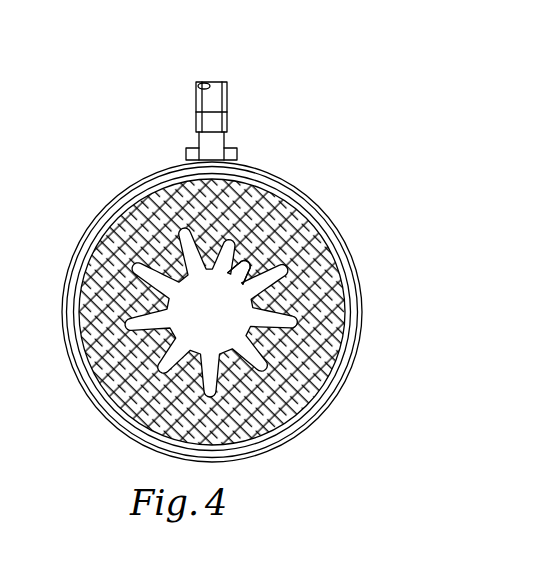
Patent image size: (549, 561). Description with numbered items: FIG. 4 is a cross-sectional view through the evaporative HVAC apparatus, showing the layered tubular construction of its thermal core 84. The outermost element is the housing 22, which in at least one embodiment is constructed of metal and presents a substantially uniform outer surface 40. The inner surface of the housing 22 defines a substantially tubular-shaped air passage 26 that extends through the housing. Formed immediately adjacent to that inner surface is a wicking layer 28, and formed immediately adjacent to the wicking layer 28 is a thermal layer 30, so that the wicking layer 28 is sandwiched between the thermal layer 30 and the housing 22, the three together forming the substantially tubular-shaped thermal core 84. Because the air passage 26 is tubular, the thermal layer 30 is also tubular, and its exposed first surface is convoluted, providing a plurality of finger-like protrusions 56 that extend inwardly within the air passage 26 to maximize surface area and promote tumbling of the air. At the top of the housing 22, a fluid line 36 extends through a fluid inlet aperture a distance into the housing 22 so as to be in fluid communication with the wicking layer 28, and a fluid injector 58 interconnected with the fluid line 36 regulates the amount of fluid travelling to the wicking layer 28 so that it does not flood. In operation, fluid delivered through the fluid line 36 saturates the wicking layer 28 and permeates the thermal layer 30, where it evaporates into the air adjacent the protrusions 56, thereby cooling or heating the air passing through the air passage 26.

The housing 22 is at (130, 171).
The thermal core 84 is at (108, 204).
The outer surface 40 is at (93, 210).
The wicking layer 28 is at (78, 257).
The thermal layer 30 is at (82, 311).
The air passage 26 is at (223, 317).
The finger-like protrusions 56 is at (247, 276).
The fluid line 36 is at (224, 90).
The fluid injector 58 is at (226, 140).